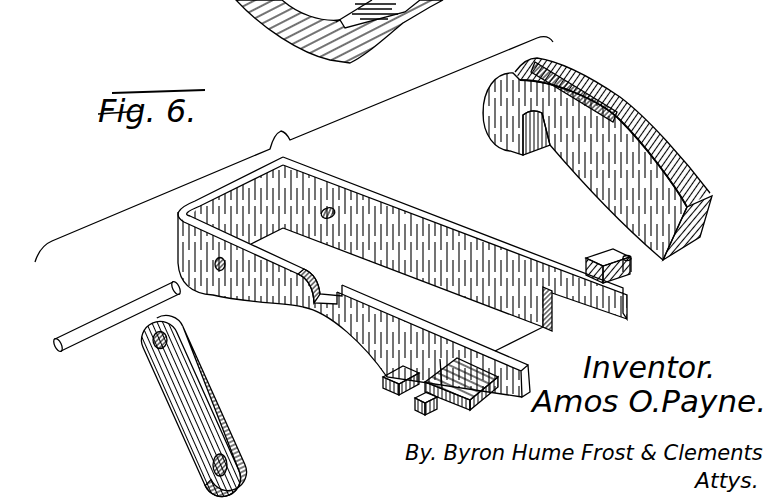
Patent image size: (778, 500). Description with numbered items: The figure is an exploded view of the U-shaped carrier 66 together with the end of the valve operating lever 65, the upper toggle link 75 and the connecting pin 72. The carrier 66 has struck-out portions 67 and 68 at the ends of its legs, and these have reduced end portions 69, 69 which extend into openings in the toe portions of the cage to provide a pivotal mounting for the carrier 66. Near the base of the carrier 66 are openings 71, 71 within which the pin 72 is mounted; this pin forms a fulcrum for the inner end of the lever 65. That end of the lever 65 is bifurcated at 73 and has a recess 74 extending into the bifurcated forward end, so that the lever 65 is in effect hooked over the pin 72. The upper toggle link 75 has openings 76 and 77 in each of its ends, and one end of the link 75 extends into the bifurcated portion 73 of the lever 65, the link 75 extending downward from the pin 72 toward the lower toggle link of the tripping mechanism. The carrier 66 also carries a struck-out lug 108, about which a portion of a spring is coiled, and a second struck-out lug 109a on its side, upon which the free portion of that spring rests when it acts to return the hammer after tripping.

The lever 65 is at (677, 147).
The U-shaped carrier 66 is at (461, 226).
The struck-out portion 67 is at (590, 261).
The struck-out portion 68 is at (472, 401).
The reduced end portion 69 is at (633, 260).
The opening 71 is at (333, 208).
The pin 72 is at (122, 306).
The bifurcated portion 73 is at (576, 80).
The recess 74 is at (536, 158).
The upper toggle link 75 is at (213, 382).
The opening 76 is at (150, 346).
The opening 77 is at (213, 467).
The struck-out lug 108 is at (386, 382).
The second struck-out lug 109a is at (313, 303).